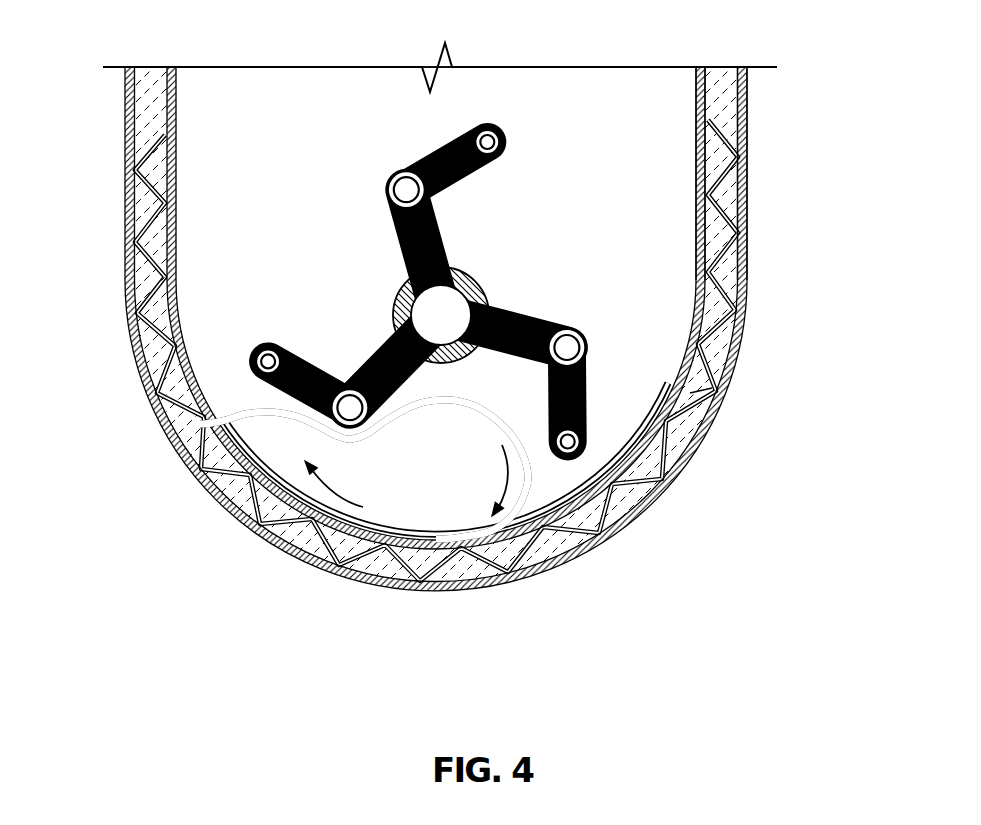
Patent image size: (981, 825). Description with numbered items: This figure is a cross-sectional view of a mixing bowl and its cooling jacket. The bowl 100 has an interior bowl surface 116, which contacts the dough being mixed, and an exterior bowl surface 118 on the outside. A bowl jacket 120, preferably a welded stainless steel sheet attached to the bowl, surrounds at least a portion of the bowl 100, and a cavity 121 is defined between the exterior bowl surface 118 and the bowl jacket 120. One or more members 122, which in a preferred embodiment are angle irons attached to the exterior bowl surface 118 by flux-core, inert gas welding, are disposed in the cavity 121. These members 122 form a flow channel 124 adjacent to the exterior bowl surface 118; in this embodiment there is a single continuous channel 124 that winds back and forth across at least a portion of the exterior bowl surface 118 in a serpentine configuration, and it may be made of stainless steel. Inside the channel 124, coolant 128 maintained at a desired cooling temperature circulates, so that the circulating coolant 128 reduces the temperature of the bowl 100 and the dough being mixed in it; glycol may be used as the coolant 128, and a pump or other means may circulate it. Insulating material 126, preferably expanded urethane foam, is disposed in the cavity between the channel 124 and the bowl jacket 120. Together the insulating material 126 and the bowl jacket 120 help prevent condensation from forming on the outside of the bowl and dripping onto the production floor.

The bowl 100 is at (172, 117).
The interior bowl surface 116 is at (698, 185).
The exterior bowl surface 118 is at (746, 183).
The bowl jacket 120 is at (123, 118).
The cavity 121 is at (150, 75).
The members 122 is at (170, 195).
The flow channel 124 is at (138, 228).
The insulating material 126 is at (145, 276).
The coolant 128 is at (733, 361).